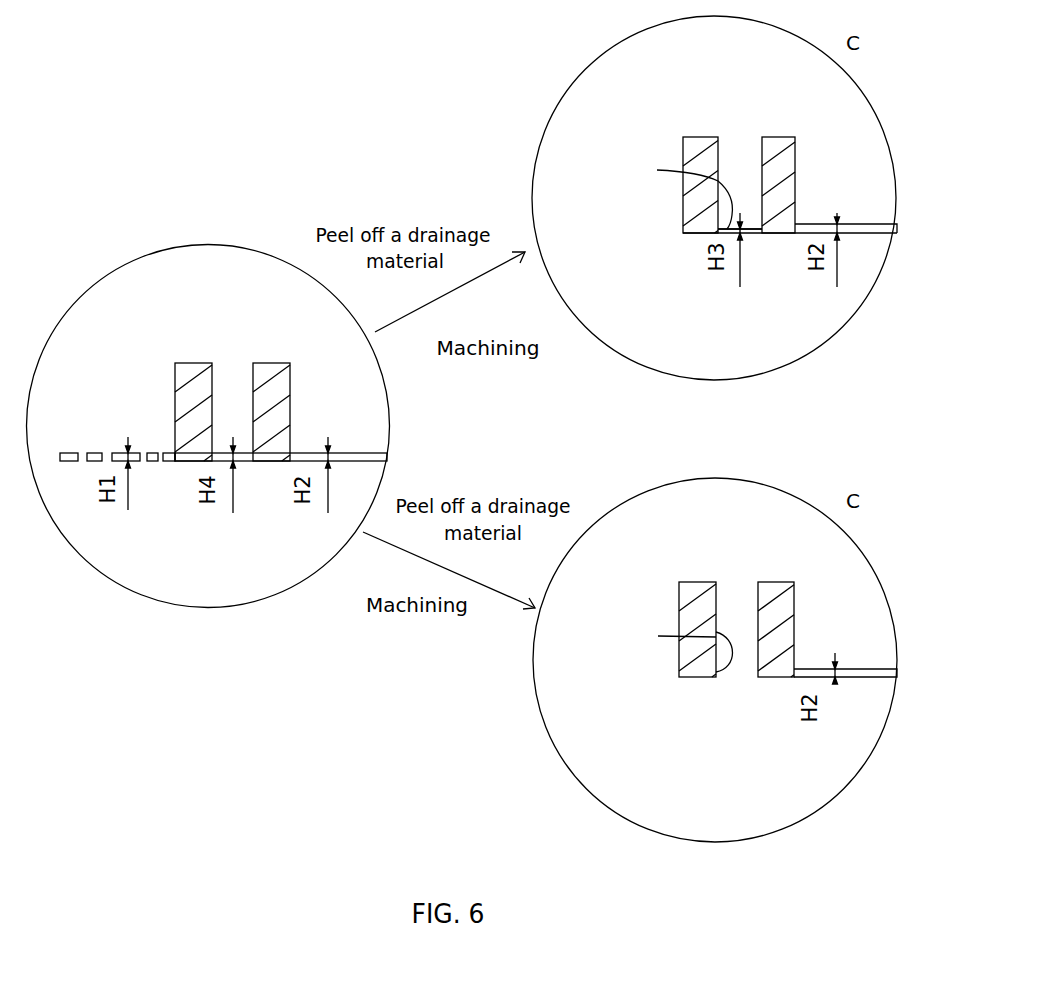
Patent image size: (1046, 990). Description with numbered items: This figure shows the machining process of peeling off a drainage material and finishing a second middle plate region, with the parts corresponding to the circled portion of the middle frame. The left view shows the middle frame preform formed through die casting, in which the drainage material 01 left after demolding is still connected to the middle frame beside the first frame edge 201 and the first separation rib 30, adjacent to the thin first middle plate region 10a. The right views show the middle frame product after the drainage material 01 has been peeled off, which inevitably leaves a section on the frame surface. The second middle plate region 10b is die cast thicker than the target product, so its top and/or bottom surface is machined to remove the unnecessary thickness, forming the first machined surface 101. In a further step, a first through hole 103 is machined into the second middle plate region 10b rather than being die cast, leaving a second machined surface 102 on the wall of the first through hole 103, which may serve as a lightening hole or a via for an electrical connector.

The first frame edge 201 is at (190, 377).
The first separation rib 30 is at (278, 377).
The drainage material 01 is at (73, 452).
The first middle plate region 10a is at (303, 453).
The first machined surface 101 is at (671, 195).
The second middle plate region 10b is at (745, 232).
The second machined surface 102 is at (669, 649).
The first through hole 103 is at (735, 672).